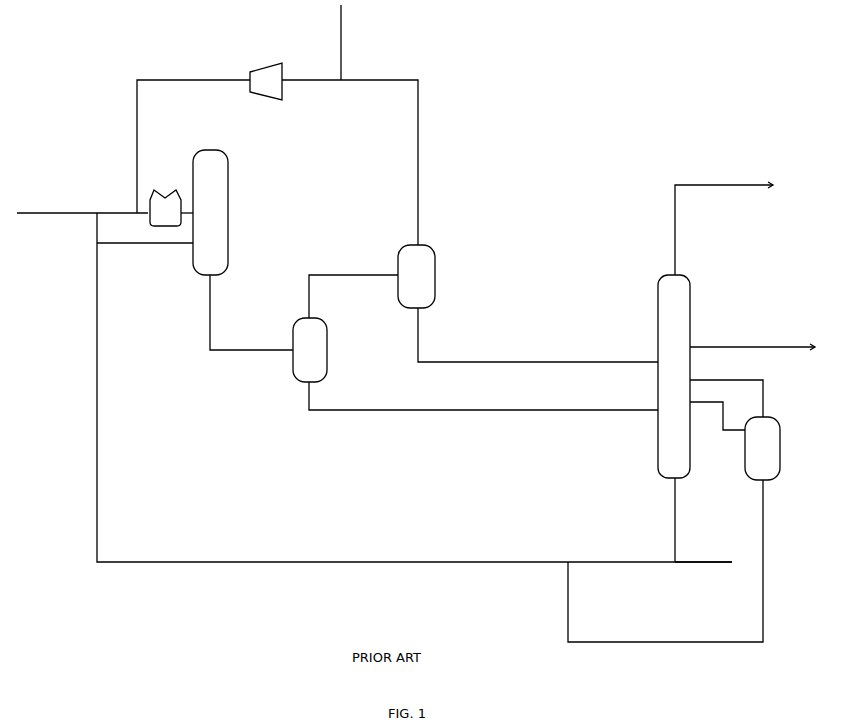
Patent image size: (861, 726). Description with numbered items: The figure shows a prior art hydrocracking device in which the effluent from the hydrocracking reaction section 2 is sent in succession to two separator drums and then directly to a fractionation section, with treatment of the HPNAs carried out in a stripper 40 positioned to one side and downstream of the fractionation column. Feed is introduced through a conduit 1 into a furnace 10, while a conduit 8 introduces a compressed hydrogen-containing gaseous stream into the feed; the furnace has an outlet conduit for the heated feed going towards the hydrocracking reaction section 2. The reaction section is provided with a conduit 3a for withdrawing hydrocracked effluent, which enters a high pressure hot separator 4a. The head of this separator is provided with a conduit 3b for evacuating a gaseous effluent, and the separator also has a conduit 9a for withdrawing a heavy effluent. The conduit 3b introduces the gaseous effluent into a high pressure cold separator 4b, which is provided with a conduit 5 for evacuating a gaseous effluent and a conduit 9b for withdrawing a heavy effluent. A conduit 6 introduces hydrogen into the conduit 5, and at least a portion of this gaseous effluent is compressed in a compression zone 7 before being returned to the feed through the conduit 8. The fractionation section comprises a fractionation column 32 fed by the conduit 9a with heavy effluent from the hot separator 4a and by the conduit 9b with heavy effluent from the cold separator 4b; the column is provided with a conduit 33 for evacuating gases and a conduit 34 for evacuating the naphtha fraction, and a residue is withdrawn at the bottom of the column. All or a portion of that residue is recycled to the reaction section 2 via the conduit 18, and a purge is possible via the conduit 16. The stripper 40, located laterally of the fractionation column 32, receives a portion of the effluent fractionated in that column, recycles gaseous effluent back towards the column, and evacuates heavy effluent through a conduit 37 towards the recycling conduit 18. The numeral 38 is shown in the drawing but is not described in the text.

The conduit 1 is at (82, 201).
The hydrocracking reaction section 2 is at (162, 212).
The conduit 3a is at (251, 312).
The conduit 3b is at (353, 284).
The high pressure hot separator 4a is at (310, 350).
The high pressure cold separator 4b is at (416, 276).
The conduit 5 is at (365, 162).
The conduit 6 is at (332, 42).
The compression zone 7 is at (266, 81).
The conduit 8 is at (186, 138).
The conduit 9a is at (483, 396).
The conduit 9b is at (538, 335).
The furnace 10 is at (171, 208).
The conduit 16 is at (703, 574).
The conduit 18 is at (414, 402).
The fractionation column 32 is at (674, 376).
The conduit 33 is at (724, 223).
The conduit 34 is at (752, 337).
The conduit 37 is at (682, 561).
The column bottoms line 38 is at (689, 520).
The stripper 40 is at (735, 430).